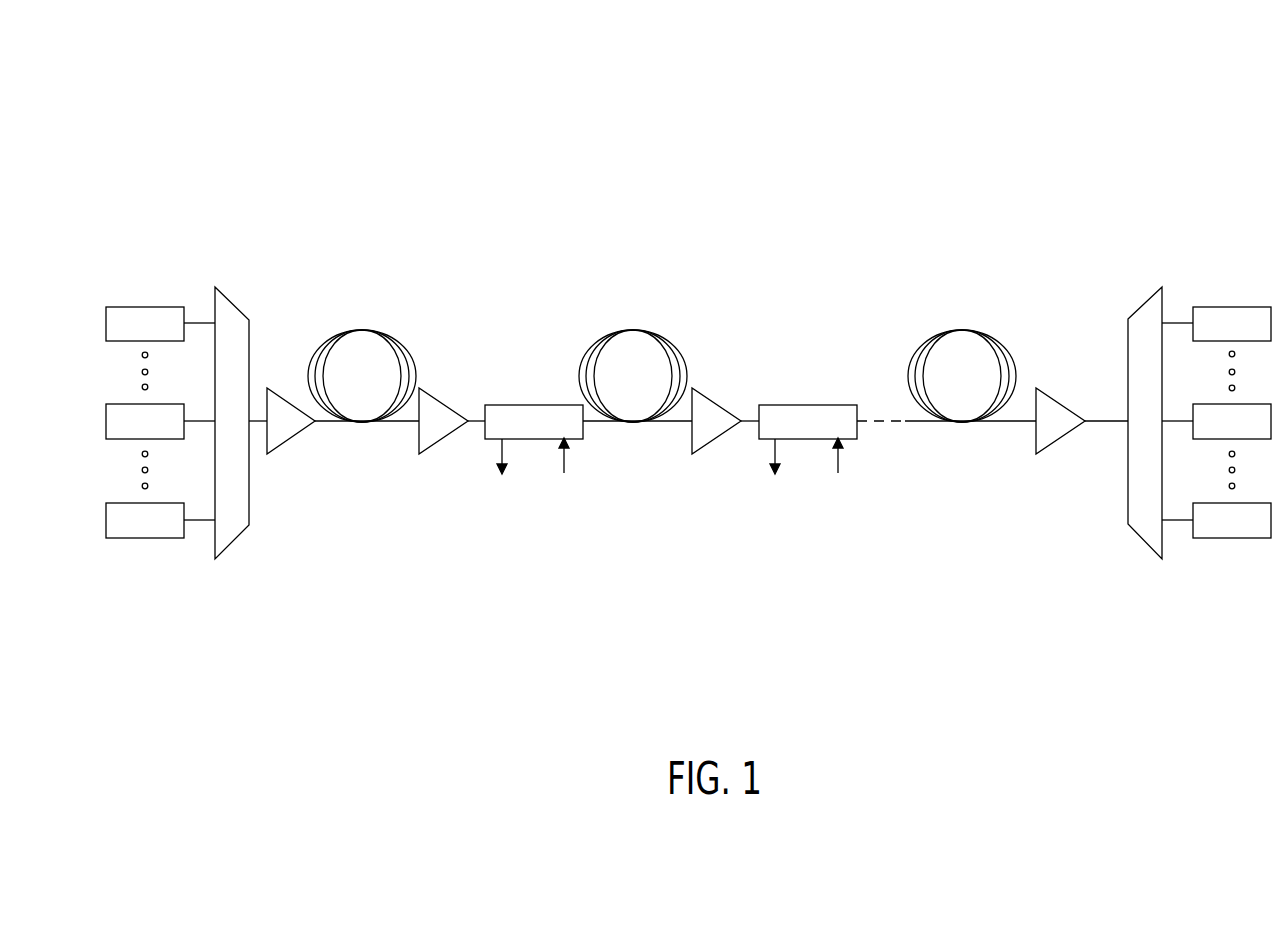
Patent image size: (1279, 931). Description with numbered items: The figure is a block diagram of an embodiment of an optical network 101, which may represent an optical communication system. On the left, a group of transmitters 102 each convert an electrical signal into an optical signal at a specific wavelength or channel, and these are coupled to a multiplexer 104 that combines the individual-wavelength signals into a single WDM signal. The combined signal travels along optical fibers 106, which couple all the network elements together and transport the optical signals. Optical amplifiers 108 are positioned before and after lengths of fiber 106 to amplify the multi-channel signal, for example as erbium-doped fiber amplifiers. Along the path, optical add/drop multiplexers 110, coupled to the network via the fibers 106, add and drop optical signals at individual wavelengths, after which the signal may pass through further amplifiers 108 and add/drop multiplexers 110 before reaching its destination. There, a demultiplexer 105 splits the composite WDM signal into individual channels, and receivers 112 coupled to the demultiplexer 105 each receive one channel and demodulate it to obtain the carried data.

The optical network 101 is at (189, 66).
The transmitter 102 is at (132, 306).
The multiplexer 104 is at (232, 301).
The demultiplexer 105 is at (1147, 301).
The optical fiber 106 is at (356, 330).
The optical amplifier 108 is at (291, 441).
The optical add/drop multiplexer 110 is at (521, 404).
The receiver 112 is at (1247, 306).